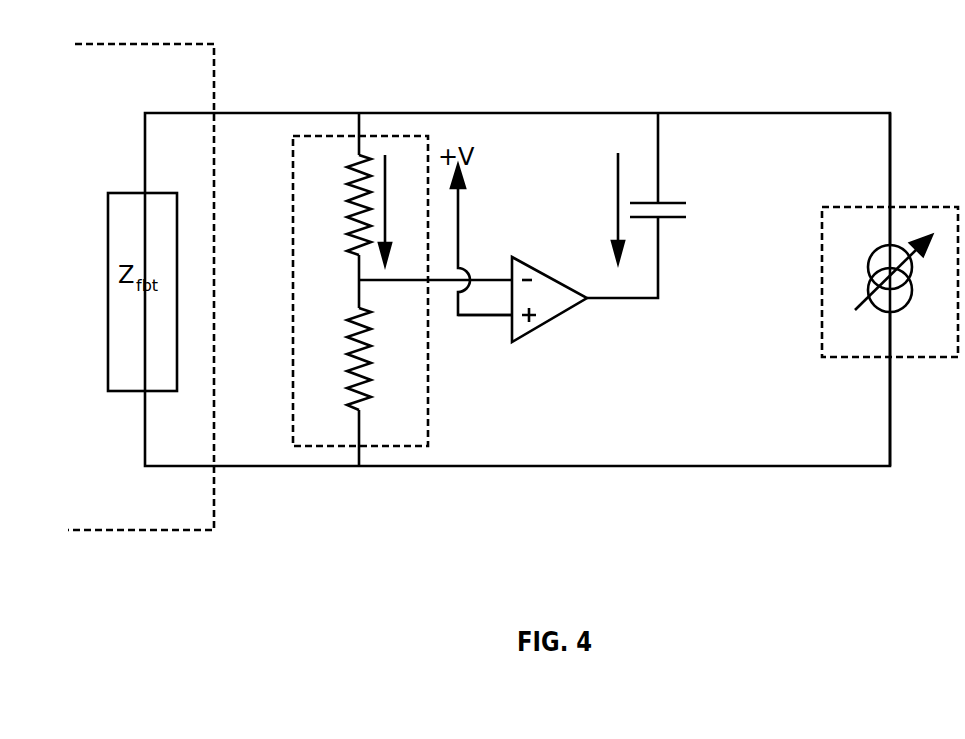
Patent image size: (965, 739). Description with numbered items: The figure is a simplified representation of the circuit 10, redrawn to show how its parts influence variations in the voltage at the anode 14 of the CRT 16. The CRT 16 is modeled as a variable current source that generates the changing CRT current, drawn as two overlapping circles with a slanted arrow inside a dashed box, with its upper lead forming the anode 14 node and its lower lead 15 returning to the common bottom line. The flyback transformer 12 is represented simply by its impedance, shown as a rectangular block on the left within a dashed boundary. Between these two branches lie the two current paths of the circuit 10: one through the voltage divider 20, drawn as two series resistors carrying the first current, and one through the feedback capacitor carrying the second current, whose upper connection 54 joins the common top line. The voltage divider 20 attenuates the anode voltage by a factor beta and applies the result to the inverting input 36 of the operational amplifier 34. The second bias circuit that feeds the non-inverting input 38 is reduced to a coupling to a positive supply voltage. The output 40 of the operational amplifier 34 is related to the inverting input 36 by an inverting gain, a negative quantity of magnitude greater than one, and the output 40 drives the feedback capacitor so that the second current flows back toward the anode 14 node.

The circuit 10 is at (255, 552).
The flyback transformer 12 is at (214, 86).
The anode 14 is at (890, 207).
The current source lower terminal lead 15 is at (890, 357).
The CRT 16 is at (822, 292).
The voltage divider 20 is at (293, 175).
The operational amplifier 34 is at (548, 323).
The inverting input 36 is at (499, 278).
The non-inverting input 38 is at (498, 316).
The output 40 is at (617, 298).
The capacitor C4 branch 54 is at (658, 165).